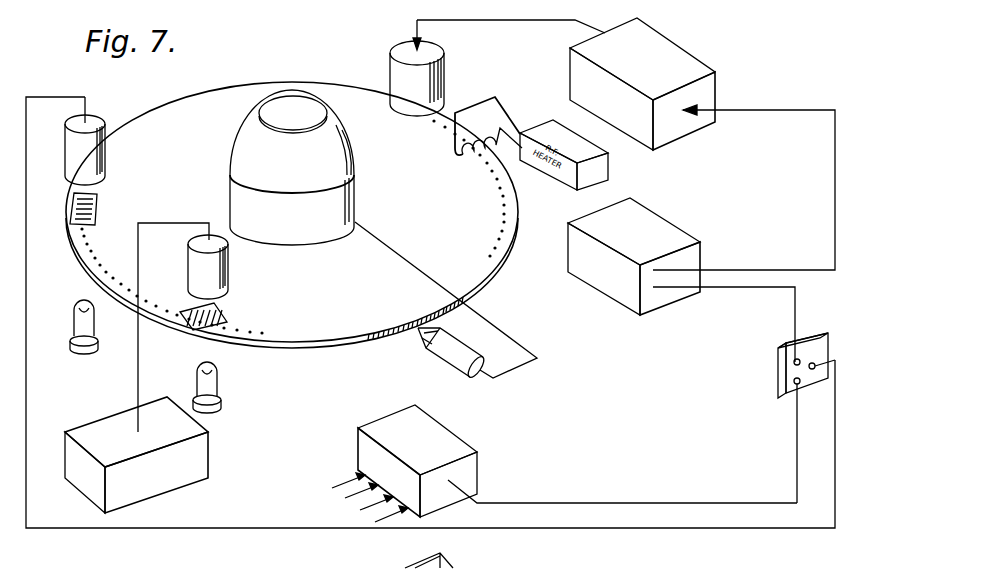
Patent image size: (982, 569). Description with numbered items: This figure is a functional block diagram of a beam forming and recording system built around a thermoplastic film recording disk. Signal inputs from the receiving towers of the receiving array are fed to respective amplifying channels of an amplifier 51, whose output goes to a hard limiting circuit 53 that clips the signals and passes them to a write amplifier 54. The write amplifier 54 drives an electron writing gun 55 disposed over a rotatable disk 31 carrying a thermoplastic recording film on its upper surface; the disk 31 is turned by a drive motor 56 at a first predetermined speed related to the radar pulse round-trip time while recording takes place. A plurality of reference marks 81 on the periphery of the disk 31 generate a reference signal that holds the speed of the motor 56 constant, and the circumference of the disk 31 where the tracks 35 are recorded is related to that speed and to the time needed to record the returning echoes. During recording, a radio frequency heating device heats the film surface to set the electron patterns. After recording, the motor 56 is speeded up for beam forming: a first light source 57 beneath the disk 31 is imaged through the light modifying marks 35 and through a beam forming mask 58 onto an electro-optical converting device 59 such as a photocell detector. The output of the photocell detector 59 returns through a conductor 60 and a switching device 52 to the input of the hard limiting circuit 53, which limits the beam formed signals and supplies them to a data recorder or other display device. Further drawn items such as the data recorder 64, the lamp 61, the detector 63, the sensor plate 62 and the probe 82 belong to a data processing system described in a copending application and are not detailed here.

The rotatable disk 31 is at (495, 267).
The tracks 35 is at (506, 218).
The amplifier 51 is at (365, 450).
The switching device 52 is at (777, 364).
The hard limiting circuit 53 is at (658, 223).
The write amplifier 54 is at (683, 62).
The electron writing gun 55 is at (396, 72).
The drive motor 56 is at (306, 177).
The first light source 57 is at (74, 318).
The beam forming mask 58 is at (97, 208).
The electro-optical converting device 59 is at (97, 154).
The conductor 60 is at (266, 528).
The lamp 61 is at (220, 375).
The sensor plate 62 is at (228, 313).
The detector cylinder 63 is at (228, 270).
The data recorder 64 is at (206, 450).
The reference marks 81 is at (374, 343).
The probe 82 is at (446, 362).